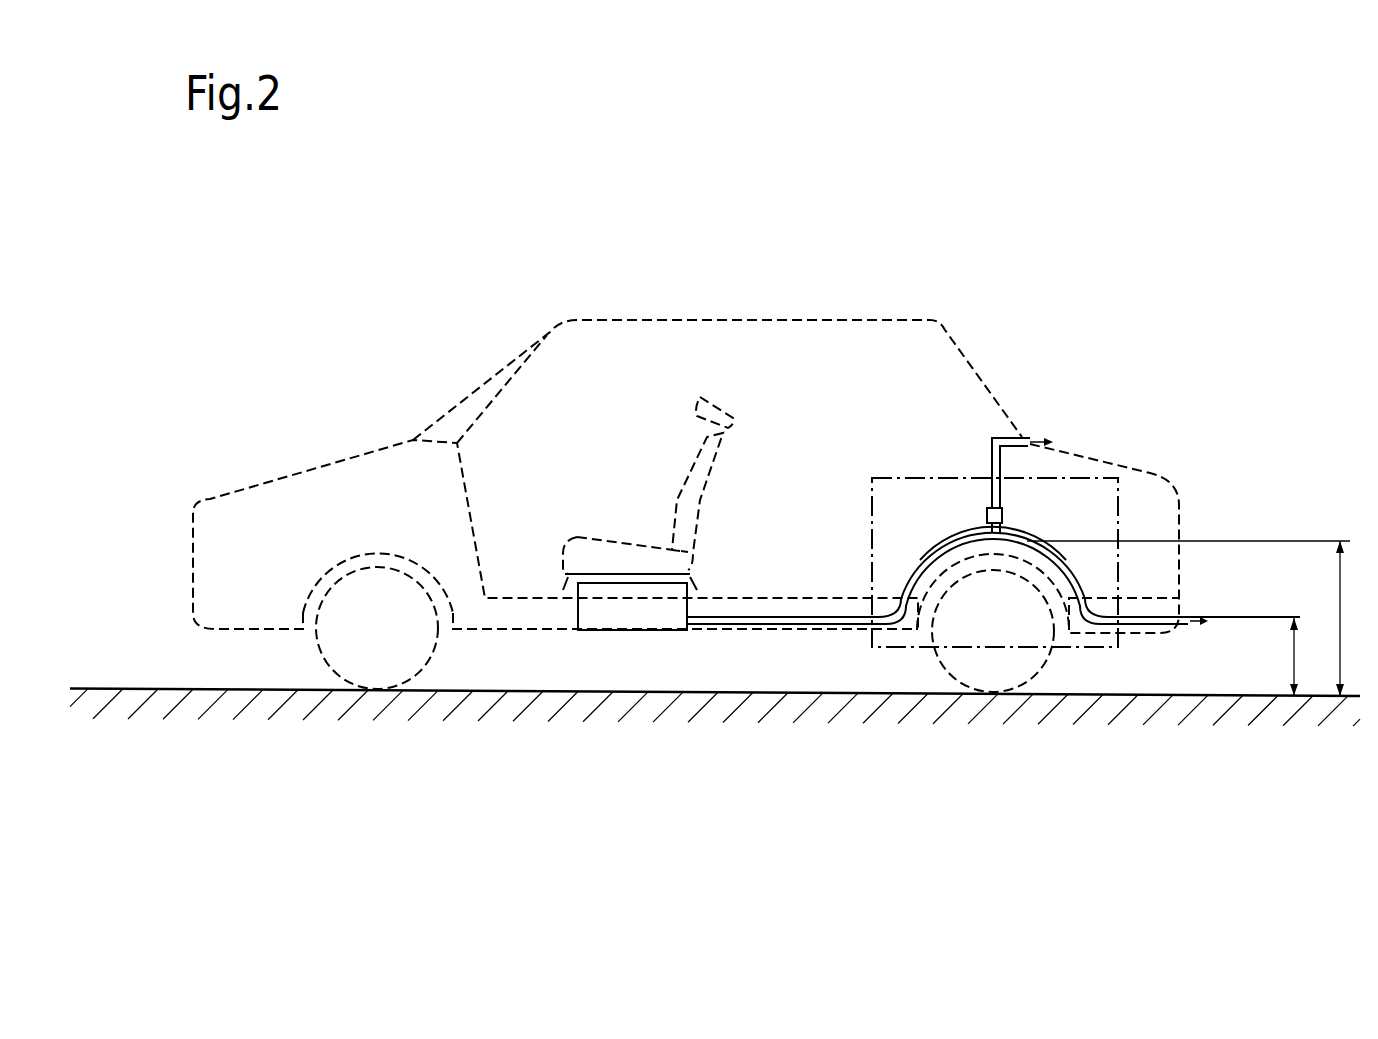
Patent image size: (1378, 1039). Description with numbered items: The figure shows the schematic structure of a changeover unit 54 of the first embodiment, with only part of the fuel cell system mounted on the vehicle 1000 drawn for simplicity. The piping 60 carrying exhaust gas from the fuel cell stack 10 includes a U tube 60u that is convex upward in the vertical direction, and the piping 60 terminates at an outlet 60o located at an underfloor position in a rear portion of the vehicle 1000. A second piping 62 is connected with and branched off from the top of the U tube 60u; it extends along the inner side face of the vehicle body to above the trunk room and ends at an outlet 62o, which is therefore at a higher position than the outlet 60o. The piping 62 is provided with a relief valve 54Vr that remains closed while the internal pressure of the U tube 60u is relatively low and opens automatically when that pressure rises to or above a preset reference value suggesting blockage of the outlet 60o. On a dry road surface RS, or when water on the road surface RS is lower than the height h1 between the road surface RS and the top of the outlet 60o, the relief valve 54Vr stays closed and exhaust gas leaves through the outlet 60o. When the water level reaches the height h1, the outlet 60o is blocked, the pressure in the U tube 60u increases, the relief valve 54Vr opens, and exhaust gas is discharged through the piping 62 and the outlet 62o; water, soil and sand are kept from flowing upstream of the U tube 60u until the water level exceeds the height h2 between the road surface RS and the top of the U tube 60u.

The vehicle 1000 is at (770, 320).
The fuel cell stack 10 is at (647, 620).
The changeover unit 54 is at (870, 518).
The relief valve 54Vr is at (1002, 516).
The piping 60 is at (830, 617).
The U tube 60u is at (957, 540).
The outlet 60o is at (1178, 627).
The piping 62 is at (992, 458).
The outlet 62o is at (1030, 437).
The road surface RS is at (103, 689).
The height h1 is at (1309, 657).
The height h2 is at (1202, 618).